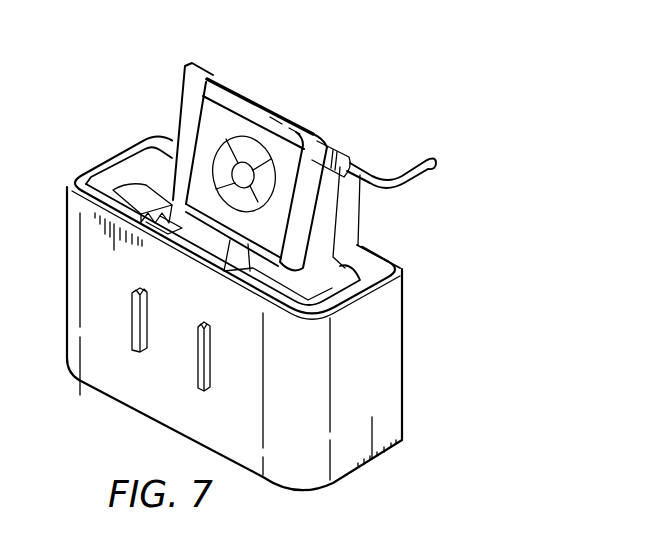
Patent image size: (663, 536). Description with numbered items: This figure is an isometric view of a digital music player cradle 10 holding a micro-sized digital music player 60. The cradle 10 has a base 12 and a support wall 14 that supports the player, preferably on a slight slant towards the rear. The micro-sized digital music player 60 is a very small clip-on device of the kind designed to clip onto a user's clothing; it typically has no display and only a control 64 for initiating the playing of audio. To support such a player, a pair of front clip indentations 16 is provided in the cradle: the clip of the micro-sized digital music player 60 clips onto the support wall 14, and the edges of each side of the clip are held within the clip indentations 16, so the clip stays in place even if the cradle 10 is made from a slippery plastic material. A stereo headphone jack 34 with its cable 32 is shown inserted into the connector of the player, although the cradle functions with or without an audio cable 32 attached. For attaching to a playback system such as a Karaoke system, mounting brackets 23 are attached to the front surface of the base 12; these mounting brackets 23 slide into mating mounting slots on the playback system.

The digital music player cradle 10 is at (419, 353).
The base 12 is at (234, 314).
The support wall 14 is at (178, 90).
The front clip indentations 16 is at (314, 218).
The mounting brackets 23 is at (130, 337).
The cable 32 is at (423, 178).
The stereo headphone jack 34 is at (337, 147).
The micro-sized digital music player 60 is at (282, 102).
The control 64 is at (248, 152).